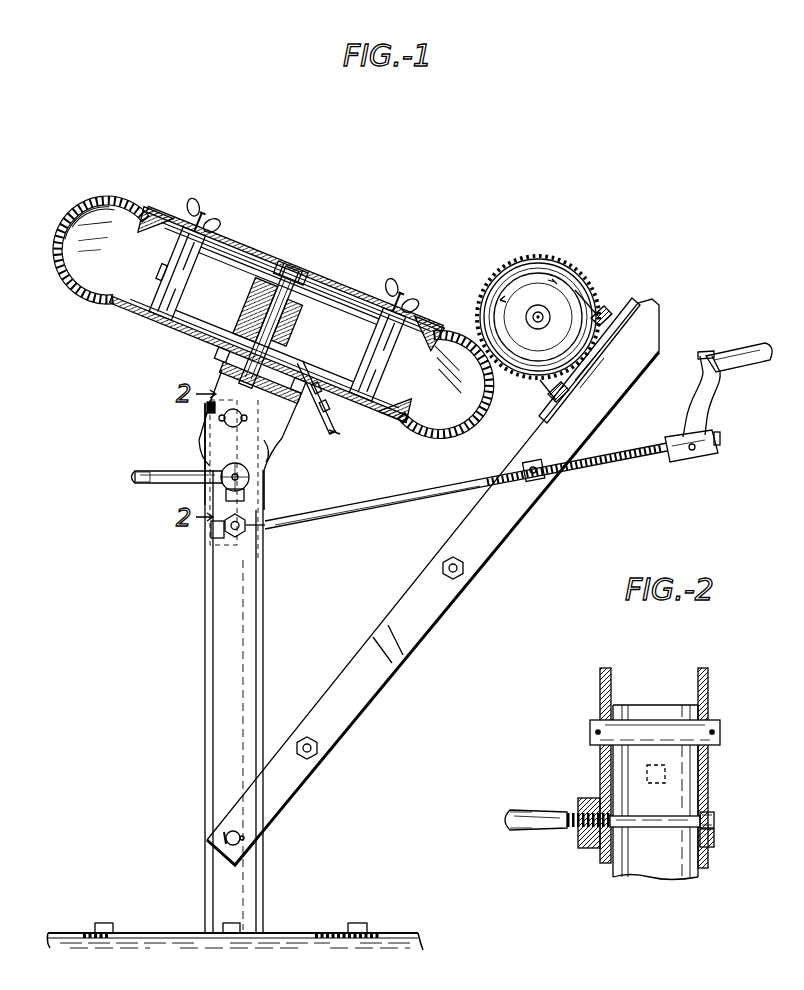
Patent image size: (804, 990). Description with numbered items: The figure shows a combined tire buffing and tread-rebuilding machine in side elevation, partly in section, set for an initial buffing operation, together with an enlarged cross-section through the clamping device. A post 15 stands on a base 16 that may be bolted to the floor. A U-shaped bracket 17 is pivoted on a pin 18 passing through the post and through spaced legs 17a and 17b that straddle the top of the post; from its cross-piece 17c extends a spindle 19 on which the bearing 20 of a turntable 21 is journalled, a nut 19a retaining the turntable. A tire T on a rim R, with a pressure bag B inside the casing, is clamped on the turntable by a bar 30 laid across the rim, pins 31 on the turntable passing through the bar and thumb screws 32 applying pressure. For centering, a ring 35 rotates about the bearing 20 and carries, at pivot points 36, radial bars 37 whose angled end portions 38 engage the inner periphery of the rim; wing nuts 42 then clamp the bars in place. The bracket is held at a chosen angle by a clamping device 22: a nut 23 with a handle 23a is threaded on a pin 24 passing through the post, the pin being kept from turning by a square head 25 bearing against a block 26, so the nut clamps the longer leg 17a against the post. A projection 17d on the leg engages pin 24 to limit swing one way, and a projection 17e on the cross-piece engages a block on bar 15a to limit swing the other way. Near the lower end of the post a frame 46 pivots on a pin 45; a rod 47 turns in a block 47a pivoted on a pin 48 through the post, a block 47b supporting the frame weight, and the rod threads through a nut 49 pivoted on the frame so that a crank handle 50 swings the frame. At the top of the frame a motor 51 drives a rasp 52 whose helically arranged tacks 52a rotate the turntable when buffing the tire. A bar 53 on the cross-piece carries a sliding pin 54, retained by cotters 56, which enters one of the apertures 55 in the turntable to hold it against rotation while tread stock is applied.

In FIG. 1, the tire T is at (122, 212).
In FIG. 1, the rim R is at (174, 236).
In FIG. 1, the pressure bag B is at (82, 290).
In FIG. 1, the post 15 is at (252, 600).
In FIG. 2, the post 15 is at (644, 872).
In FIG. 1, the bar 15a is at (243, 442).
In FIG. 2, the bar 15a is at (668, 777).
In FIG. 1, the base 16 is at (312, 932).
In FIG. 1, the U-shaped bracket 17 is at (270, 446).
In FIG. 1, the leg 17a is at (210, 406).
In FIG. 2, the leg 17a is at (600, 696).
In FIG. 1, the leg 17b is at (266, 470).
In FIG. 2, the leg 17b is at (708, 682).
In FIG. 1, the cross-piece 17c is at (262, 406).
In FIG. 1, the projection 17d is at (270, 478).
In FIG. 1, the projection 17e is at (222, 370).
In FIG. 1, the pin 18 is at (224, 420).
In FIG. 2, the pin 18 is at (720, 733).
In FIG. 1, the spindle 19 is at (280, 344).
In FIG. 1, the nut 19a is at (288, 290).
In FIG. 1, the bearing 20 is at (284, 326).
In FIG. 1, the turntable 21 is at (148, 318).
In FIG. 1, the clamping device 22 is at (166, 486).
In FIG. 2, the clamping device 22 is at (546, 806).
In FIG. 1, the nut 23 is at (248, 486).
In FIG. 2, the nut 23 is at (582, 848).
In FIG. 1, the handle 23a is at (150, 486).
In FIG. 2, the handle 23a is at (508, 828).
In FIG. 1, the pin 24 is at (224, 474).
In FIG. 2, the pin 24 is at (668, 827).
In FIG. 2, the square head 25 is at (714, 824).
In FIG. 2, the block 26 is at (714, 845).
In FIG. 1, the bar 30 is at (250, 262).
In FIG. 1, the pins 31 is at (200, 222).
In FIG. 1, the thumb screws 32 is at (222, 232).
In FIG. 1, the ring 35 is at (248, 328).
In FIG. 1, the pivot points 36 is at (266, 338).
In FIG. 1, the bars 37 is at (206, 318).
In FIG. 1, the end portions 38 is at (170, 332).
In FIG. 1, the wing nuts 42 is at (190, 330).
In FIG. 1, the pin 45 is at (242, 846).
In FIG. 1, the frame 46 is at (498, 530).
In FIG. 1, the rod 47 is at (402, 498).
In FIG. 1, the block 47a is at (262, 546).
In FIG. 1, the block 47b is at (205, 546).
In FIG. 1, the pin 48 is at (228, 538).
In FIG. 1, the nut 49 is at (540, 478).
In FIG. 1, the crank handle 50 is at (706, 396).
In FIG. 1, the motor 51 is at (606, 308).
In FIG. 1, the rasp 52 is at (584, 284).
In FIG. 1, the tacks 52a is at (548, 254).
In FIG. 1, the bar 53 is at (326, 428).
In FIG. 1, the pin 54 is at (336, 446).
In FIG. 1, the apertures 55 is at (214, 338).
In FIG. 1, the cotters 56 is at (322, 410).